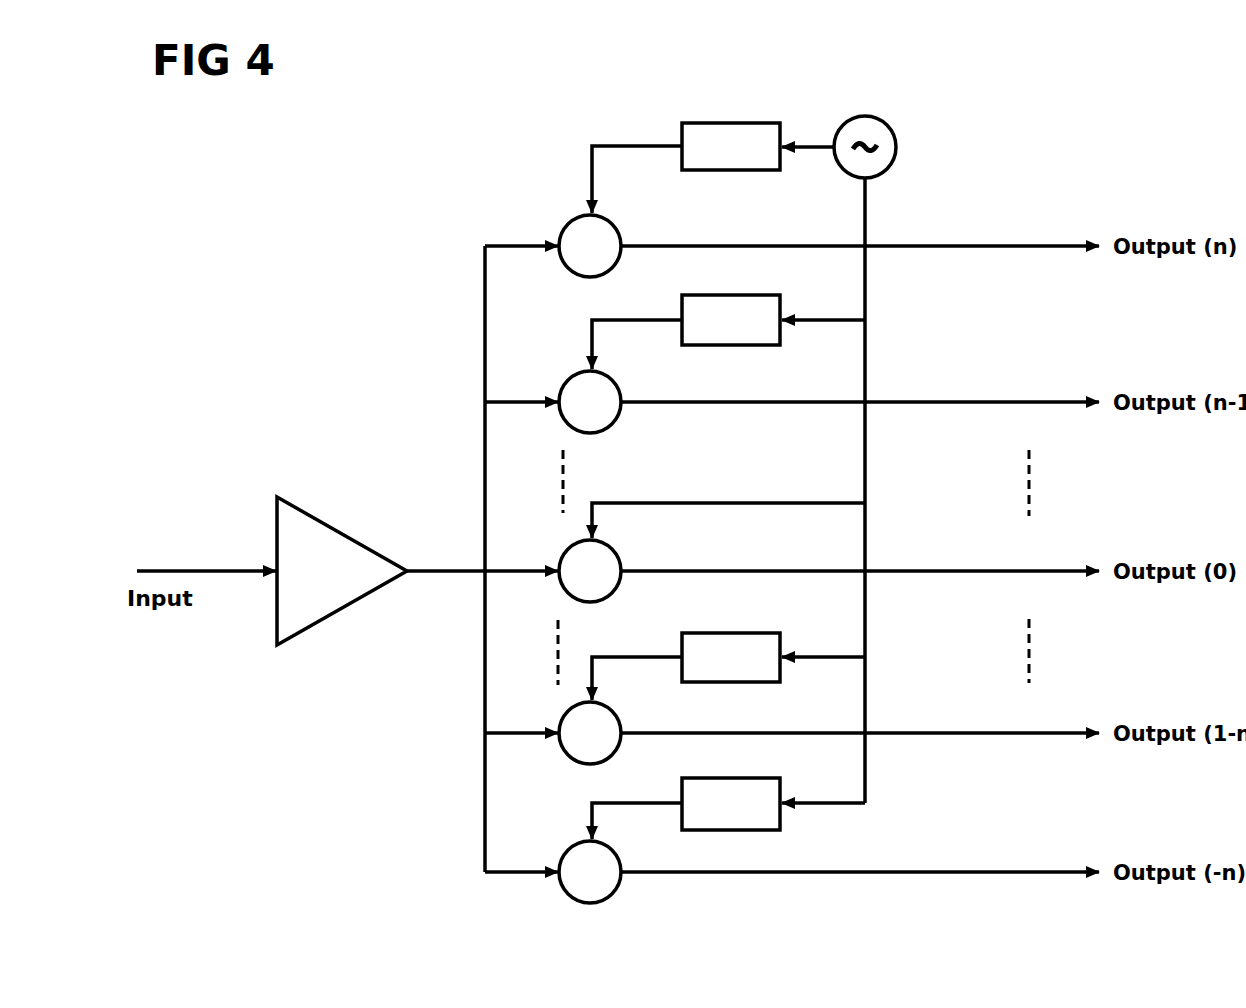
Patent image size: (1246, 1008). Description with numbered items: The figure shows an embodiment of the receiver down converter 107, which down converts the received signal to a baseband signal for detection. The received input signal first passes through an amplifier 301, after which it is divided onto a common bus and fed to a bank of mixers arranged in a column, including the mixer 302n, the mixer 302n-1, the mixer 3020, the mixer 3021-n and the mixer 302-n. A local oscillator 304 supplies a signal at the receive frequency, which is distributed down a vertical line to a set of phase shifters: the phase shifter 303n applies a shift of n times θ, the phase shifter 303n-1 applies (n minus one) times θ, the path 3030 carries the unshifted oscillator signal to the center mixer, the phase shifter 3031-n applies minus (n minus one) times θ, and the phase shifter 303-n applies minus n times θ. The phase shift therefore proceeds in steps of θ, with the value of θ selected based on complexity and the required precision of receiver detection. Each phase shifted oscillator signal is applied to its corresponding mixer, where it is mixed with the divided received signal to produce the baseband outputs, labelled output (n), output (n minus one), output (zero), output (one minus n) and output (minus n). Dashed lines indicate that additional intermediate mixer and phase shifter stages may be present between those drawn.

The receiver down converter 107 is at (492, 455).
The amplifier 301 is at (310, 510).
The mixer 302n is at (563, 208).
The mixer 302n-1 is at (560, 375).
The mixer 3020 is at (558, 547).
The mixer 3021-n is at (555, 722).
The mixer 302-n is at (568, 843).
The phase shifter 303n is at (755, 122).
The phase shifter 303n-1 is at (720, 347).
The phase shifter 3030 is at (728, 508).
The phase shifter 3031-n is at (700, 692).
The phase shifter 303-n is at (743, 832).
The local oscillator 304 is at (898, 130).